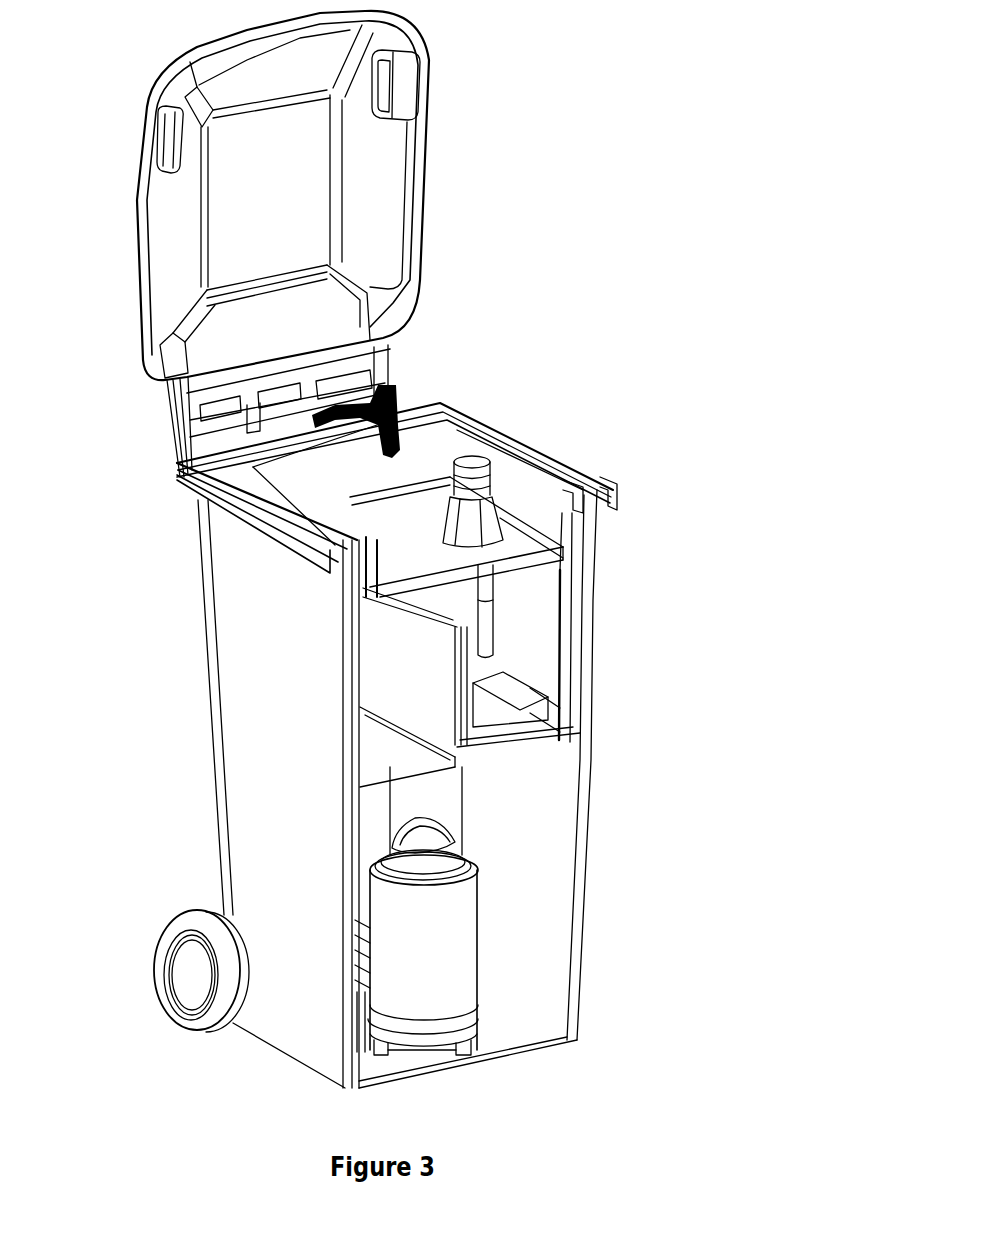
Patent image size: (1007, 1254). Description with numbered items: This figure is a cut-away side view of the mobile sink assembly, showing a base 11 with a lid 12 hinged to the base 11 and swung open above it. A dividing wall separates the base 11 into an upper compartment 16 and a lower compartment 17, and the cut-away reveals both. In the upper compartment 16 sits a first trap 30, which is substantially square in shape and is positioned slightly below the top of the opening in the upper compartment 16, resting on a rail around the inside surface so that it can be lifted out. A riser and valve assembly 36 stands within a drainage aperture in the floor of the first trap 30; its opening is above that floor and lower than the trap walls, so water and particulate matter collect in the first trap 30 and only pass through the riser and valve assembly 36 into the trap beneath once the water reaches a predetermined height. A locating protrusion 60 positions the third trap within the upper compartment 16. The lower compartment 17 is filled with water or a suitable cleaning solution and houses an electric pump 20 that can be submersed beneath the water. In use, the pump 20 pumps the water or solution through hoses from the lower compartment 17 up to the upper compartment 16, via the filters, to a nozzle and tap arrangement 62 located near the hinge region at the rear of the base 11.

The base 11 is at (597, 583).
The lid 12 is at (400, 192).
The upper compartment 16 is at (407, 668).
The lower compartment 17 is at (521, 826).
The electric pump 20 is at (433, 944).
The first trap 30 is at (407, 528).
The riser and valve assembly 36 is at (490, 473).
The locating protrusion 60 is at (405, 718).
The nozzle and tap arrangement 62 is at (381, 420).